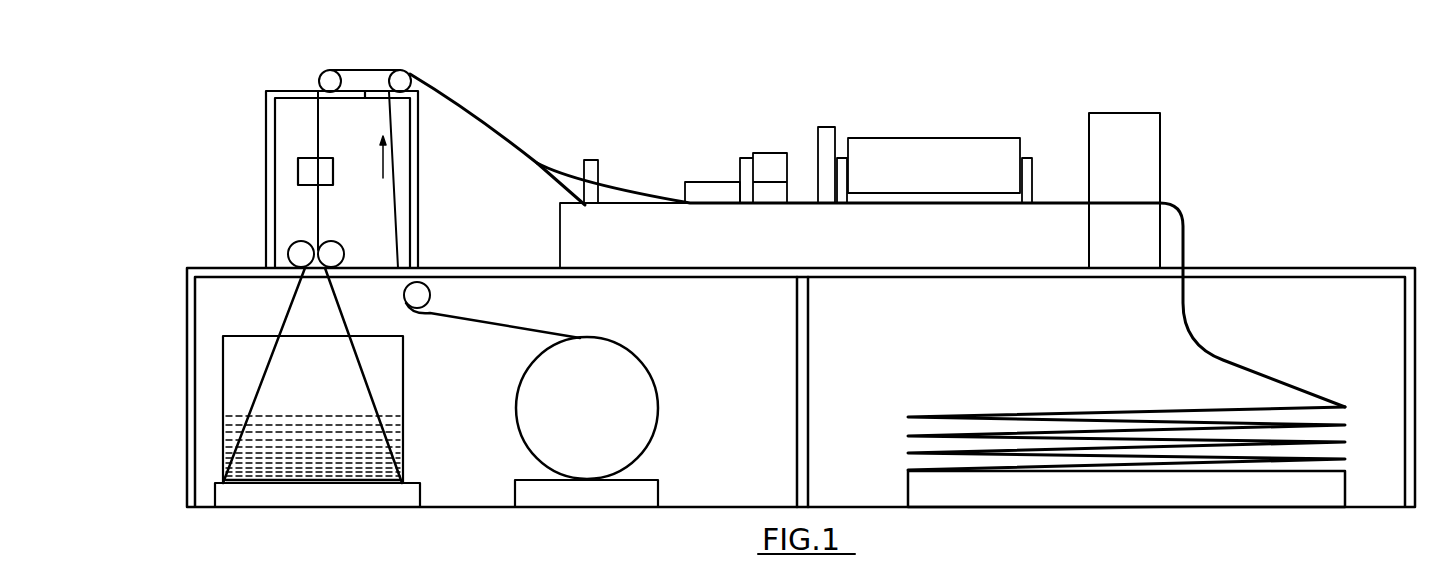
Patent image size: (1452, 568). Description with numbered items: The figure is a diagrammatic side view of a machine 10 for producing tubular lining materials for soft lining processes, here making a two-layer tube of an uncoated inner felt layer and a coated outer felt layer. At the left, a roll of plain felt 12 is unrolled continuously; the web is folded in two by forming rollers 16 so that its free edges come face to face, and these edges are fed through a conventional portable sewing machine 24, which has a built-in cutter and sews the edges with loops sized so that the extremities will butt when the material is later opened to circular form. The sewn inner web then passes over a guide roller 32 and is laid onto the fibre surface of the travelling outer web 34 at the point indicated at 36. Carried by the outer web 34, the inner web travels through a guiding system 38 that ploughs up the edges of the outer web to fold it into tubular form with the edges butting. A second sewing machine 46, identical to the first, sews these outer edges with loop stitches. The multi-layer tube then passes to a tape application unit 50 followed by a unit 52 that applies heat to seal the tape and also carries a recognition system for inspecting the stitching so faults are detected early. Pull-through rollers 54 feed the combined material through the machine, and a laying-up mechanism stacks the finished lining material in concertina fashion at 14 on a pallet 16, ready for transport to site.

The machine 10 is at (476, 110).
The roll of plain felt 12 is at (221, 370).
The stacked tubular material 14 is at (962, 409).
The pallet / forming rollers 16 is at (298, 245).
The sewing machine 24 is at (298, 166).
The guide roller 32 is at (318, 80).
The outer web 34 is at (538, 174).
The point where inner web meets outer web 36 is at (362, 70).
The guiding system 38 is at (704, 185).
The sewing machine 46 is at (778, 167).
The tape application unit 50 is at (836, 136).
The heat sealing and recognition unit 52 is at (969, 148).
The pull-through rollers 54 is at (1101, 147).